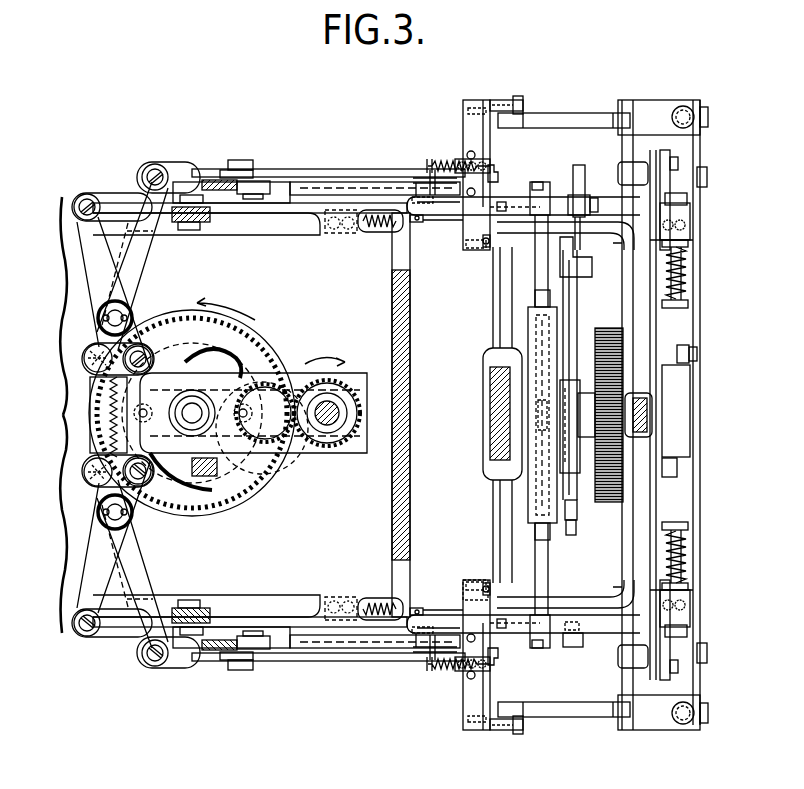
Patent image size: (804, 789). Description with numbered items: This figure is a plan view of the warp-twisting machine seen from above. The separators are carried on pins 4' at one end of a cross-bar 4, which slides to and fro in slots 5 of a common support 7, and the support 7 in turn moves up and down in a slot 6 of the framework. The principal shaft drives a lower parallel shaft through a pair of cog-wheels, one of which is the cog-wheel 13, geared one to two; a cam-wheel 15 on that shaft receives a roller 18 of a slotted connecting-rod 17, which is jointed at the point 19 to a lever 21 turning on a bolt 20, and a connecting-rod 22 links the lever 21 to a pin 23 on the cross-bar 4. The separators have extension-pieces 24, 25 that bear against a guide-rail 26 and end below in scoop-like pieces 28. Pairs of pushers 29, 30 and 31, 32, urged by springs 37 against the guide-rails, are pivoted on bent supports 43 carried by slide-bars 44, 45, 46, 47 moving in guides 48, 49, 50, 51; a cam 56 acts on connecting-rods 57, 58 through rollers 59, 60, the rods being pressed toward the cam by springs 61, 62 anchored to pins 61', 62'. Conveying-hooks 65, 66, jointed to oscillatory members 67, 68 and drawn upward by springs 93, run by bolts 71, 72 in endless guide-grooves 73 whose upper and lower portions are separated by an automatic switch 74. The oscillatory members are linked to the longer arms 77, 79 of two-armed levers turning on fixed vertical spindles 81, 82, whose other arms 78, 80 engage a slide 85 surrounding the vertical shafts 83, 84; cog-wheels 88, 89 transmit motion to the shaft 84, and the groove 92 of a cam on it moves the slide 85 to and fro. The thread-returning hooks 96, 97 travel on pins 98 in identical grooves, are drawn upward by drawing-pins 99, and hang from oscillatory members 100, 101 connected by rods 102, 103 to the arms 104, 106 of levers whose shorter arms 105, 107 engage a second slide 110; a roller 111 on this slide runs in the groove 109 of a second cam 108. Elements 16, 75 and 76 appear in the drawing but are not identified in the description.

The cross-bar 4 is at (526, 415).
The pin 4' is at (547, 681).
The slots 5 is at (535, 316).
The slot 6 is at (490, 462).
The support 7 is at (497, 410).
The cog-wheel 13 is at (610, 329).
The cam-wheel 15 is at (540, 415).
The shaft end 16 is at (578, 495).
The connecting-rod 17 is at (577, 306).
The roller 18 is at (573, 380).
The joint point 19 is at (585, 262).
The bolt 20 is at (590, 201).
The lever 21 is at (585, 176).
The connecting-rod 22 is at (576, 525).
The pin 23 is at (583, 640).
The extension-piece 24 is at (463, 701).
The extension-piece 25 is at (465, 216).
The guide-rail 26 is at (465, 714).
The scoop-like pieces 28 is at (503, 203).
The pusher 29 is at (472, 730).
The pusher 30 is at (472, 249).
The pusher 31 is at (473, 583).
The pusher 32 is at (475, 100).
The springs 37 is at (507, 100).
The bent supports 43 is at (580, 116).
The slide-bar 44 is at (694, 712).
The slide-bar 45 is at (690, 223).
The slide-bar 46 is at (690, 607).
The slide-bar 47 is at (707, 118).
The guide 48 is at (704, 722).
The guide 49 is at (688, 244).
The guide 50 is at (688, 586).
The guide 51 is at (686, 105).
The cam 56 is at (676, 411).
The connecting-rod 57 is at (654, 567).
The connecting-rod 58 is at (700, 558).
The roller 59 is at (668, 477).
The roller 60 is at (683, 345).
The spring 61 is at (696, 556).
The pin 61' is at (695, 572).
The spring 62 is at (696, 273).
The pin 62' is at (700, 248).
The conveying-hook 65 is at (499, 656).
The conveying-hook 66 is at (499, 175).
The oscillatory member 67 is at (220, 656).
The oscillatory member 68 is at (220, 170).
The bolt 71 is at (428, 660).
The bolt 72 is at (428, 170).
The guide-groove 73 is at (390, 170).
The automatic switch 74 is at (445, 160).
The pulley 75 is at (182, 665).
The pulley 76 is at (186, 166).
The longer arm 77 is at (135, 555).
The arm 78 is at (99, 502).
The longer arm 79 is at (135, 260).
The arm 80 is at (99, 326).
The spindle 81 is at (99, 517).
The spindle 82 is at (99, 311).
The vertical shaft 83 is at (349, 382).
The vertical shaft 84 is at (192, 413).
The slide 85 is at (84, 382).
The cog-wheel 88 is at (337, 377).
The cog-wheel 89 is at (273, 384).
The groove 92 is at (268, 471).
The spring 93 is at (458, 160).
The hook for bringing back the threads 96 is at (368, 601).
The hook for bringing back the threads 97 is at (366, 229).
The pin 98 is at (311, 212).
The drawing-pin 99 is at (419, 223).
The oscillatory member 100 is at (211, 611).
The oscillatory member 101 is at (211, 217).
The rod 102 is at (100, 632).
The rod 103 is at (100, 199).
The arm 104 is at (90, 566).
The shorter arm 105 is at (142, 486).
The arm 106 is at (90, 262).
The shorter arm 107 is at (138, 344).
The second cam 108 is at (205, 506).
The groove 109 is at (249, 499).
The slide 110 is at (216, 380).
The roller 111 is at (106, 408).